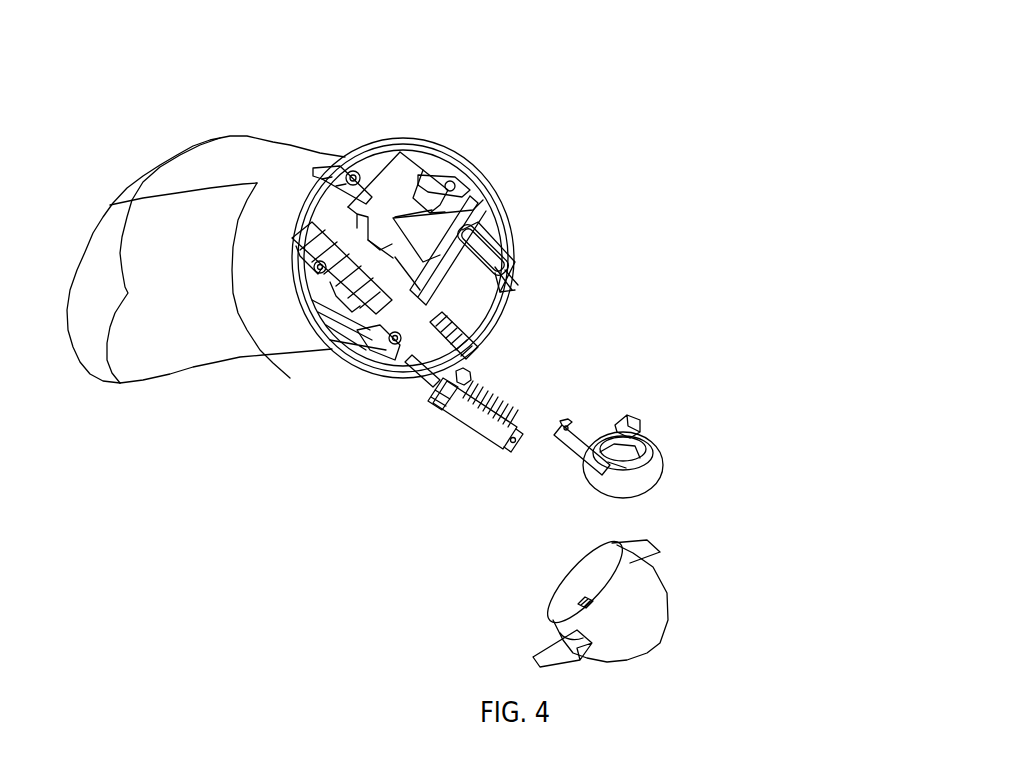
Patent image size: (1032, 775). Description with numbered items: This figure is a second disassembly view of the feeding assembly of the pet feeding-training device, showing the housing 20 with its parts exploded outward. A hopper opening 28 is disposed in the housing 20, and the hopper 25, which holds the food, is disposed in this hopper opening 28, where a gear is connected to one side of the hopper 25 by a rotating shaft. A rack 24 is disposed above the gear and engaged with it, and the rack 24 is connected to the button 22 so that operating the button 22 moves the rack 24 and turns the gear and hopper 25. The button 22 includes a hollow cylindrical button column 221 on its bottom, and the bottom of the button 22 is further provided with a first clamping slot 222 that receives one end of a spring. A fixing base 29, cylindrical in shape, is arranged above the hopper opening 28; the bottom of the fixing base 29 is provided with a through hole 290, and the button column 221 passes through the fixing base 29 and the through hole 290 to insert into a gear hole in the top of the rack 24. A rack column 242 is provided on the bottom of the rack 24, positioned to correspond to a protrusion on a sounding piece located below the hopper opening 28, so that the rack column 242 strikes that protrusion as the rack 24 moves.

The housing 20 is at (293, 183).
The hopper opening 28 is at (430, 213).
The hopper 25 is at (500, 258).
The rack 24 is at (497, 400).
The rack column 242 is at (445, 405).
The button column 221 is at (583, 435).
The first clamping slot 222 is at (636, 437).
The button 22 is at (635, 468).
The through hole 290 is at (577, 600).
The fixing base 29 is at (638, 622).